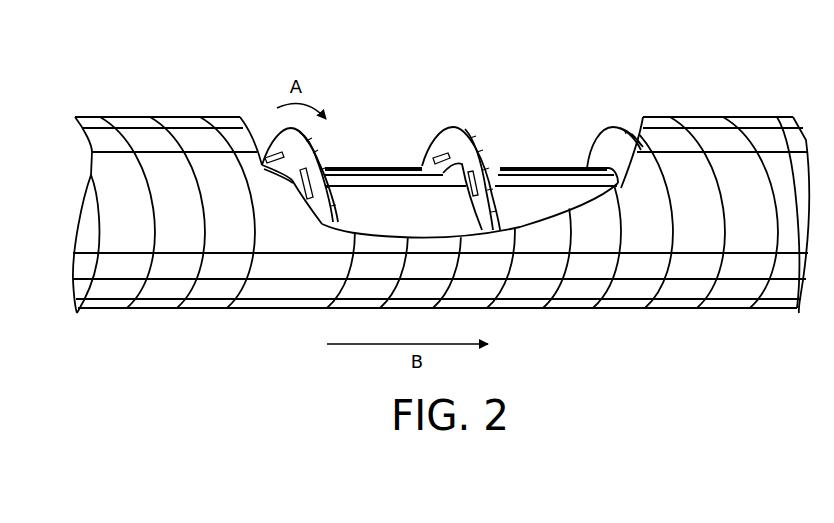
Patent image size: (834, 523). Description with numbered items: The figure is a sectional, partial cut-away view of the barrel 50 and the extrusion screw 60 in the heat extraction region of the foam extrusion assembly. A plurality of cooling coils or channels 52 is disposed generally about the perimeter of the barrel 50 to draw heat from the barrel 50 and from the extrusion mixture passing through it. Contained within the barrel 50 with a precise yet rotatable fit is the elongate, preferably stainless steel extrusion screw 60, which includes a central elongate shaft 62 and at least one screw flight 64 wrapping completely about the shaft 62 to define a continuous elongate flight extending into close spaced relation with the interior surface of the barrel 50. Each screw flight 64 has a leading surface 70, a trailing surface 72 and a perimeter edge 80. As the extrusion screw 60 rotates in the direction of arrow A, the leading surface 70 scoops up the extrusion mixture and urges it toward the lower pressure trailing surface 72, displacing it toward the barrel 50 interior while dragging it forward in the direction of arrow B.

The barrel 50 is at (196, 136).
The cooling coils or channels 52 is at (170, 132).
The extrusion screw 60 is at (360, 158).
The central elongate shaft 62 is at (573, 168).
The screw flight 64 is at (457, 132).
The leading surface 70 is at (443, 173).
The trailing surface 72 is at (488, 150).
The perimeter edge 80 is at (502, 203).